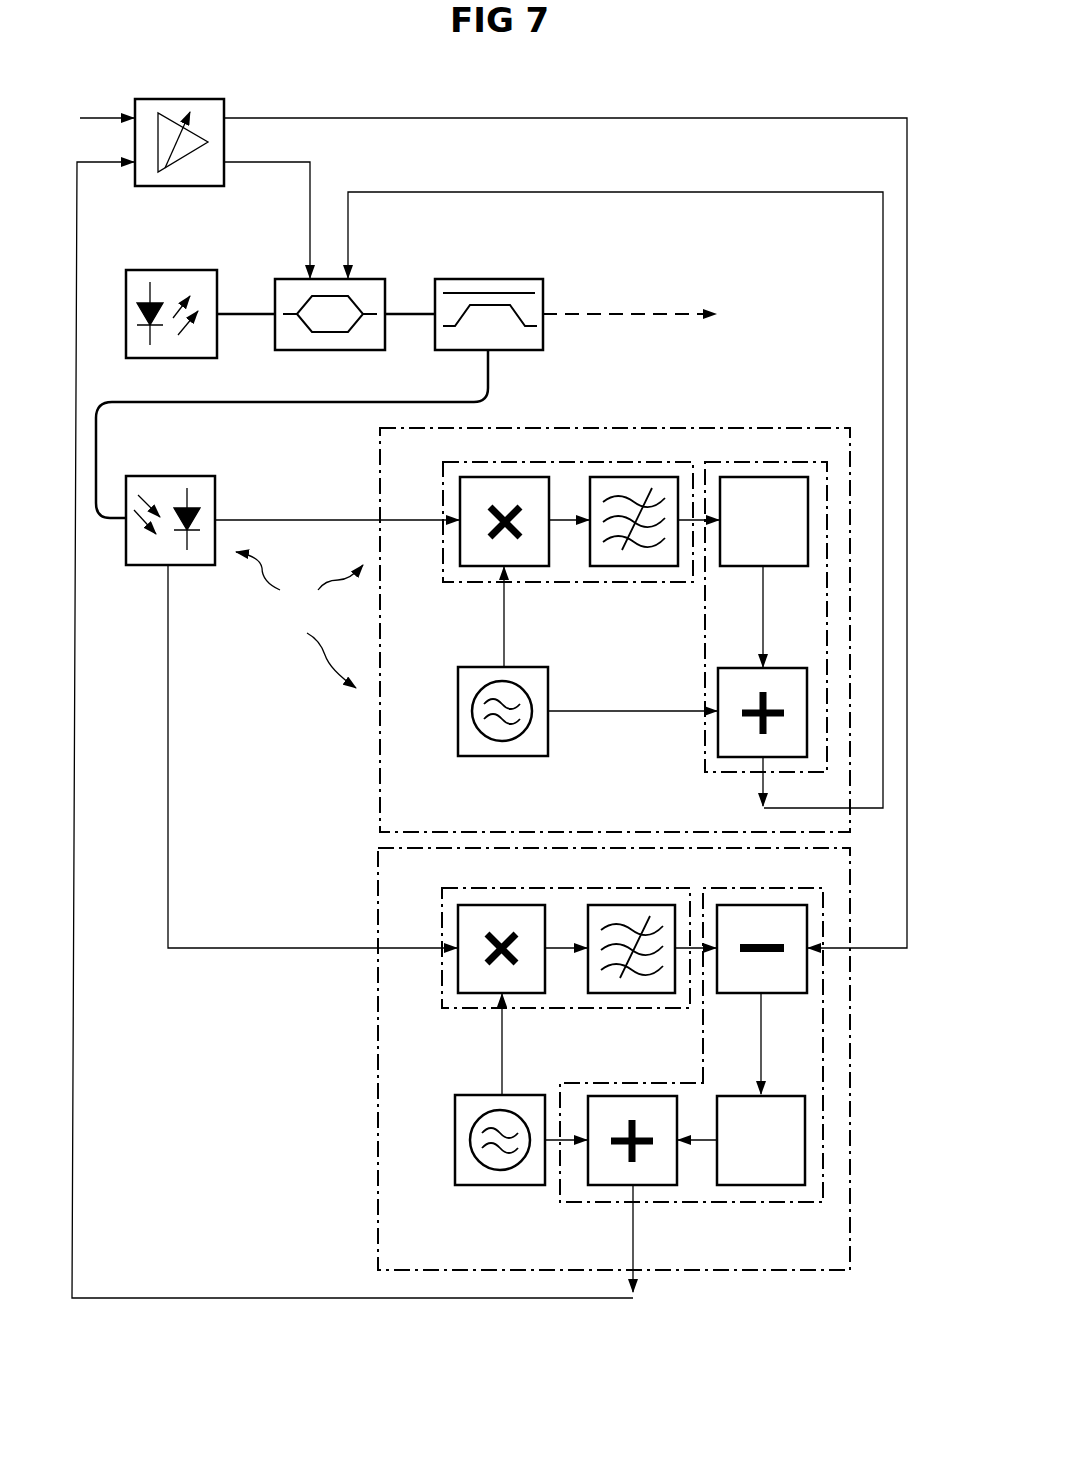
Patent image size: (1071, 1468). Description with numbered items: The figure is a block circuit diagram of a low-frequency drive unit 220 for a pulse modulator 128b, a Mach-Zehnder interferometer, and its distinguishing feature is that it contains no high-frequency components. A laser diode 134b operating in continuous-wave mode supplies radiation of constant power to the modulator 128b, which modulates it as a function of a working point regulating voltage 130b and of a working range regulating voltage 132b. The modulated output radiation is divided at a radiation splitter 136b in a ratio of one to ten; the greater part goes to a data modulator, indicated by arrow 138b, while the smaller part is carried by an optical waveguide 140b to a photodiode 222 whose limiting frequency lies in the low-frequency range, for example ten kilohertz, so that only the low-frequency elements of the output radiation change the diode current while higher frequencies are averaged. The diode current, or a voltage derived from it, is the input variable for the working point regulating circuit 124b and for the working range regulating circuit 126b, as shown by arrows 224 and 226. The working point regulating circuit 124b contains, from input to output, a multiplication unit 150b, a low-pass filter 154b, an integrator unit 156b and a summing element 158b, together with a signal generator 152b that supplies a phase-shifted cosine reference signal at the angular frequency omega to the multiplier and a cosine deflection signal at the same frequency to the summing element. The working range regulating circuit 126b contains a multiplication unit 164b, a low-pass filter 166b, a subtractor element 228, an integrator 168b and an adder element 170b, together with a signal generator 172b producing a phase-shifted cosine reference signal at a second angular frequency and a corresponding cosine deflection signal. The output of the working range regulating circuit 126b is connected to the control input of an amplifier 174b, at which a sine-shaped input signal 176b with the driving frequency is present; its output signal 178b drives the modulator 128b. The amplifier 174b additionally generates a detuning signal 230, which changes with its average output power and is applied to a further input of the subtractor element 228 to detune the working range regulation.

The amplifier 174b is at (206, 99).
The input signal 176b is at (102, 117).
The output signal 178b is at (292, 162).
The working point regulating voltage 130b is at (706, 192).
The detuning signal 230 is at (802, 118).
The laser diode 134b is at (217, 345).
The pulse modulator 128b is at (385, 345).
The radiation splitter 136b is at (519, 279).
The arrow to data modulator 138b is at (636, 314).
The optical waveguide 140b is at (491, 370).
The working point regulating circuit 124b is at (815, 428).
The photodiode 222 is at (134, 565).
The arrow 224 is at (311, 520).
The low-frequency drive unit 220 is at (299, 620).
The multiplication unit 150b is at (538, 566).
The low-pass filter 154b is at (642, 566).
The integrator unit 156b is at (780, 566).
The signal generator 152b is at (548, 742).
The summing element 158b is at (733, 757).
The arrow 226 is at (168, 872).
The working range regulating circuit 126b is at (378, 1104).
The multiplication unit 164b is at (535, 993).
The low-pass filter 166b is at (628, 993).
The subtractor element 228 is at (788, 993).
The signal generator 172b is at (455, 1150).
The adder element 170b is at (655, 1185).
The integrator 168b is at (790, 1185).
The working range regulating voltage 132b is at (74, 1082).